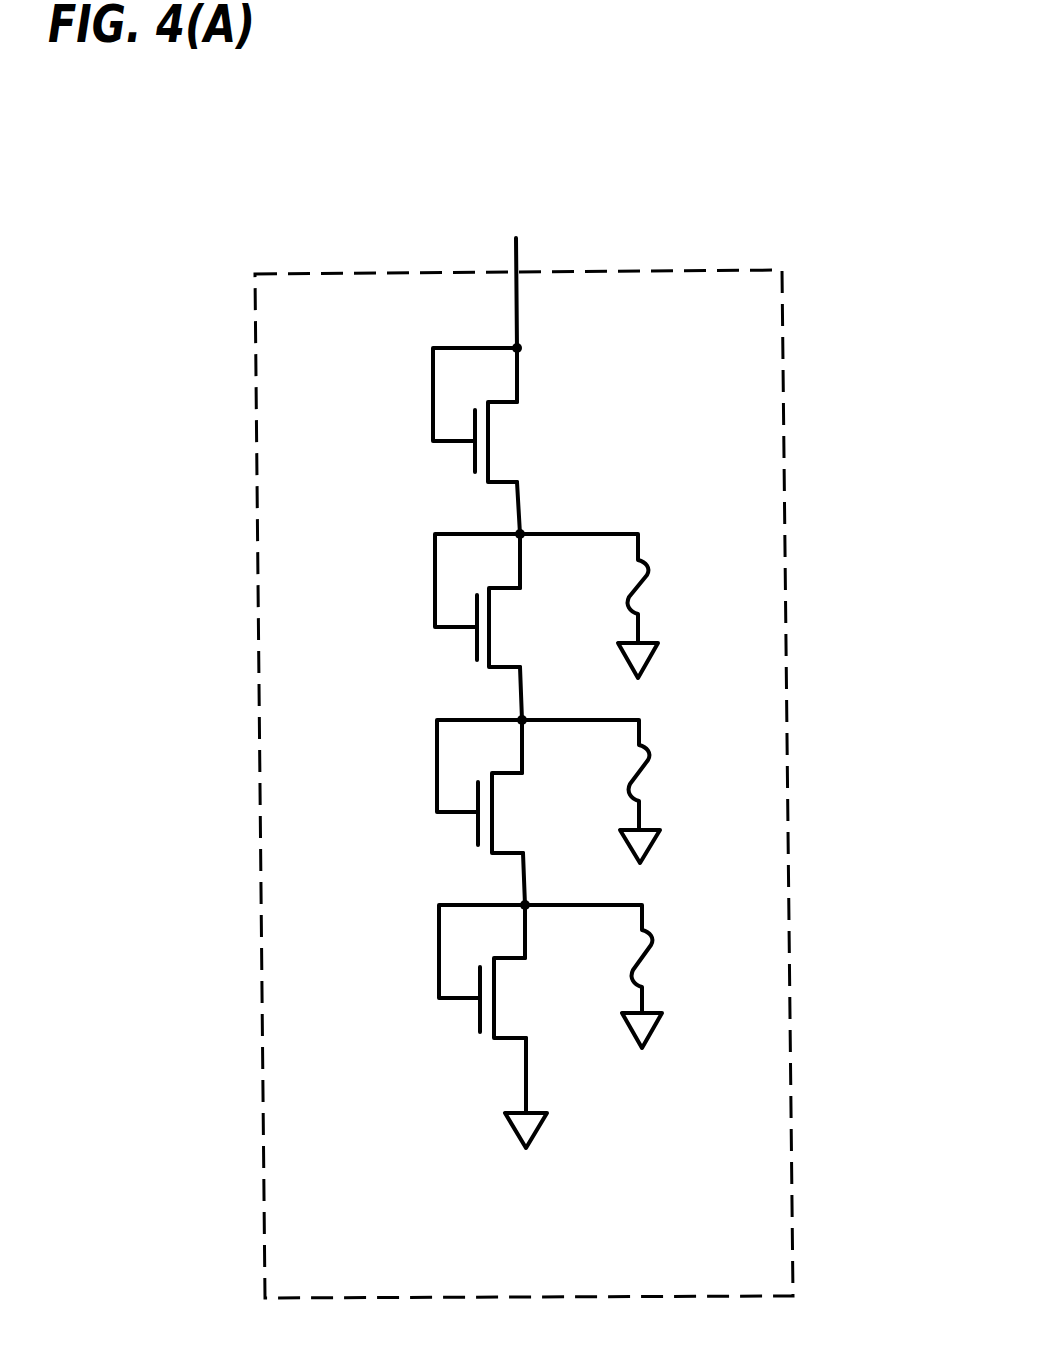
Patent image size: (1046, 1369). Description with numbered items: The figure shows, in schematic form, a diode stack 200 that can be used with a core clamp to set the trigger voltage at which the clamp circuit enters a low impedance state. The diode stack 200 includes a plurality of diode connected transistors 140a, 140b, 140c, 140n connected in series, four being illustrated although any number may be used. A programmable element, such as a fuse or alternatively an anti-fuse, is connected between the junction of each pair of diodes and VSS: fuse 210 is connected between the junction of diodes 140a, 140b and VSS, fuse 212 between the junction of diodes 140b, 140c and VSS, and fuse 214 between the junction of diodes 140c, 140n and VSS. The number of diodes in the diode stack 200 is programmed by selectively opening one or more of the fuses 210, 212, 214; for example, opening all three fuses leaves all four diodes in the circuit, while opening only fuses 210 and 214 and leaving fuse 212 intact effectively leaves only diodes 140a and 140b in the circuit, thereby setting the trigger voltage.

The diode stack 200 is at (745, 270).
The diode connected transistor 140a is at (425, 396).
The diode connected transistor 140b is at (428, 583).
The diode connected transistor 140c is at (430, 768).
The diode connected transistor 140n is at (432, 953).
The fuse 210 is at (655, 592).
The fuse 212 is at (657, 783).
The fuse 214 is at (660, 968).